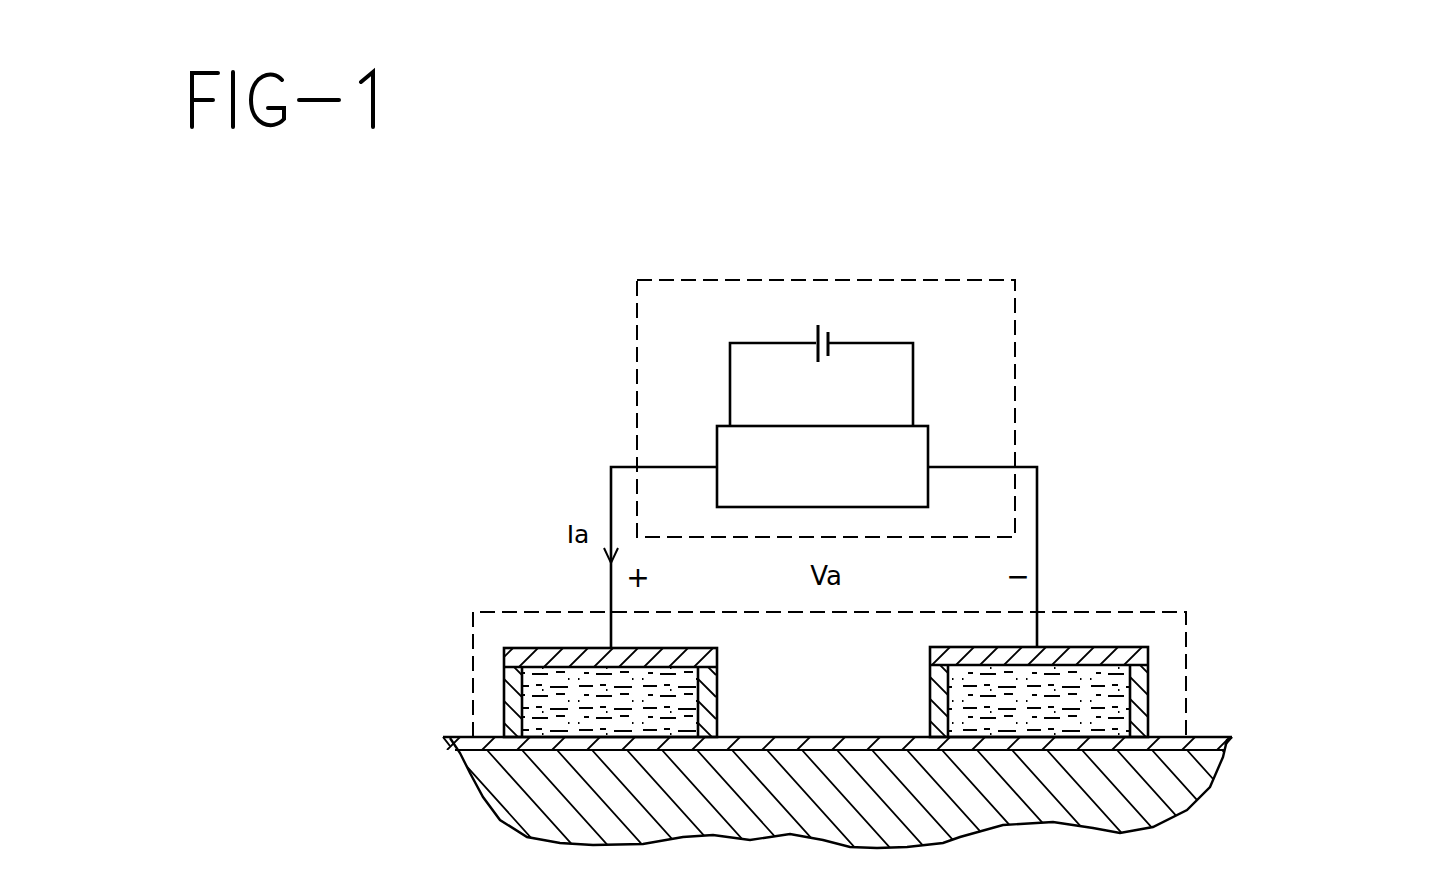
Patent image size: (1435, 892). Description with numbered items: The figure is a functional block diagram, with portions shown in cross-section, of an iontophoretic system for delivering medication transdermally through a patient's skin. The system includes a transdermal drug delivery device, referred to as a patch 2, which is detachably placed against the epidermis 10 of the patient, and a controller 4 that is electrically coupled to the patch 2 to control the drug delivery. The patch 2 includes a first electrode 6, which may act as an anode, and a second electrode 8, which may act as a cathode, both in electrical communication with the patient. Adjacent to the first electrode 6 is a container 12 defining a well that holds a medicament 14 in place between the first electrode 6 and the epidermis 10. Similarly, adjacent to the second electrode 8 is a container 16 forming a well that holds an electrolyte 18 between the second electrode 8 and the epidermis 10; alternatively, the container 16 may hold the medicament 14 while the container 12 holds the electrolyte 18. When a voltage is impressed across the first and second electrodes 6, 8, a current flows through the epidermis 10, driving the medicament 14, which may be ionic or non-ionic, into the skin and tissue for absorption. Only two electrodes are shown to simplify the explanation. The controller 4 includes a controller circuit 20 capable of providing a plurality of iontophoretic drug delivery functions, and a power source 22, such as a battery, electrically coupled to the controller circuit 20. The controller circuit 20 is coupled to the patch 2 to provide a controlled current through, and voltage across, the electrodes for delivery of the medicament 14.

The patch 2 is at (1097, 610).
The controller 4 is at (637, 420).
The first electrode 6 is at (556, 648).
The second electrode 8 is at (1118, 647).
The epidermis 10 is at (1232, 740).
The container 12 is at (506, 692).
The medicament 14 is at (623, 727).
The container 16 is at (1147, 687).
The electrolyte 18 is at (1050, 727).
The controller circuit 20 is at (717, 430).
The power source 22 is at (815, 335).